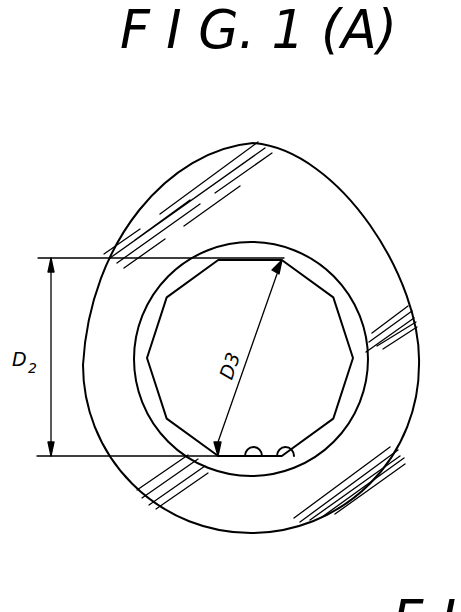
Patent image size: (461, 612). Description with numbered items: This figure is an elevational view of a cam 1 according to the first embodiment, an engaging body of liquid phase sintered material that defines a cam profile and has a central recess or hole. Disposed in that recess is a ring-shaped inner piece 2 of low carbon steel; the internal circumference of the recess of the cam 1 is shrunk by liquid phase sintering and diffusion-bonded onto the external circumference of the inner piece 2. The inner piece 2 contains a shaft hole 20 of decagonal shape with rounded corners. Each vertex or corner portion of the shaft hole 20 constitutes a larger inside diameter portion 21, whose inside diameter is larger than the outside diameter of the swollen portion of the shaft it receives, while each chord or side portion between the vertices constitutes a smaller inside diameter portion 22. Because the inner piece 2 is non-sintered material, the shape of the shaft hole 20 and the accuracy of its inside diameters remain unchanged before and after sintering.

The cam 1 is at (283, 178).
The ring-shaped inner piece 2 is at (353, 332).
The shaft hole 20 is at (302, 384).
The larger inside diameter portion 21 is at (288, 441).
The smaller inside diameter portion 22 is at (260, 460).